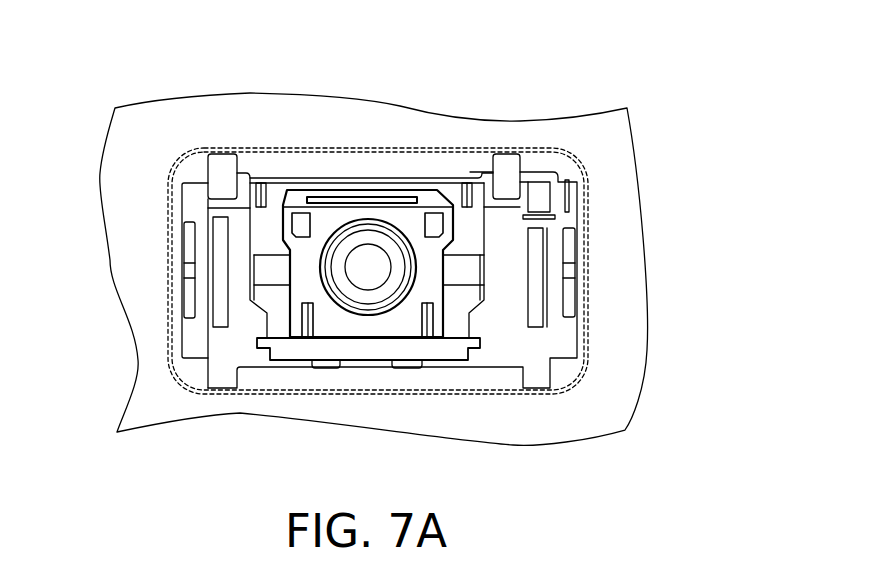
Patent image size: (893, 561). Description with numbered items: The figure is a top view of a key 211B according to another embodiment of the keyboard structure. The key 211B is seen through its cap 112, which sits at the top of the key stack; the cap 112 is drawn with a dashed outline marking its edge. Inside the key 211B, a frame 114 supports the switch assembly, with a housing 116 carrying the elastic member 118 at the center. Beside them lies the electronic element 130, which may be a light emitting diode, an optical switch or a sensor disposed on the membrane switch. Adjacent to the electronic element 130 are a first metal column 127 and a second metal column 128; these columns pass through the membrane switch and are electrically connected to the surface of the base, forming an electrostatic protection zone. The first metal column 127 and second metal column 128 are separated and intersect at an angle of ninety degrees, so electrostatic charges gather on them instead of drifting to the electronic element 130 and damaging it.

The key 211B is at (108, 38).
The cap 112 is at (588, 182).
The bracket frame 114 is at (457, 192).
The camera housing 116 is at (332, 218).
The elastic member 118 is at (369, 262).
The electronic element 130 is at (543, 194).
The first metal column 127 is at (567, 180).
The second metal column 128 is at (555, 217).